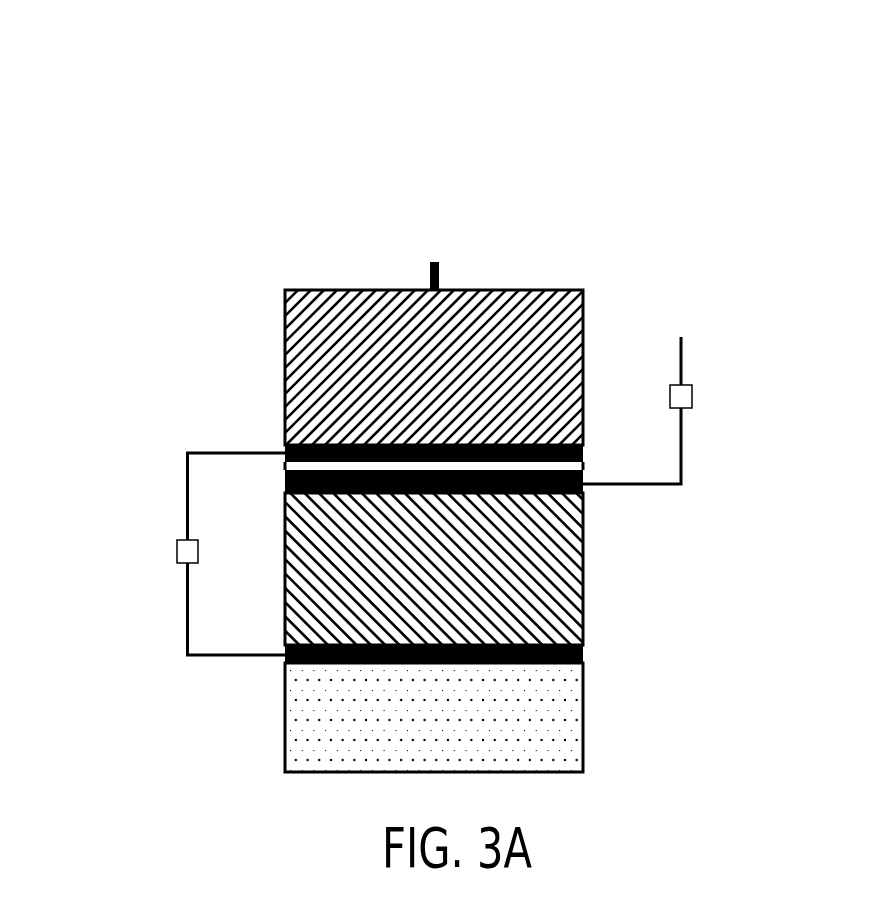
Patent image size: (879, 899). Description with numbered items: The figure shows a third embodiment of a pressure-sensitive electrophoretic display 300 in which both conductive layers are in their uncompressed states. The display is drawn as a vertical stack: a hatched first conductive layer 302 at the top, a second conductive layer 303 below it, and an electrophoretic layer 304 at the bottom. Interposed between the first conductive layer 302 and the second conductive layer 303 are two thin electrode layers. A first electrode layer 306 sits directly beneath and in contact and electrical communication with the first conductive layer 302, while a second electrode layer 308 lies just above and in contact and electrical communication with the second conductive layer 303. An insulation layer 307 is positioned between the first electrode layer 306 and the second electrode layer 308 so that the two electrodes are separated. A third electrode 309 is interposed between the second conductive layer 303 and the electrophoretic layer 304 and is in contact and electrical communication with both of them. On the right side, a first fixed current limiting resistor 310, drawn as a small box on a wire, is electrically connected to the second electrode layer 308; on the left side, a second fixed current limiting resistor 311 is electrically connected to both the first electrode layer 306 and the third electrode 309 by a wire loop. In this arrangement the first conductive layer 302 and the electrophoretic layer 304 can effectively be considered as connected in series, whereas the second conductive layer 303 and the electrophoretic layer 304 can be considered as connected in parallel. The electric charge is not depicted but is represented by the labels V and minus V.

The pressure-sensitive electrophoretic display 300 is at (212, 143).
The first conductive layer 302 is at (290, 370).
The second conductive layer 303 is at (583, 570).
The electrophoretic layer 304 is at (578, 720).
The first electrode layer 306 is at (287, 451).
The insulation layer 307 is at (287, 467).
The second electrode layer 308 is at (585, 487).
The third electrode 309 is at (583, 655).
The first fixed current limiting resistor 310 is at (683, 397).
The second fixed current limiting resistor 311 is at (186, 552).